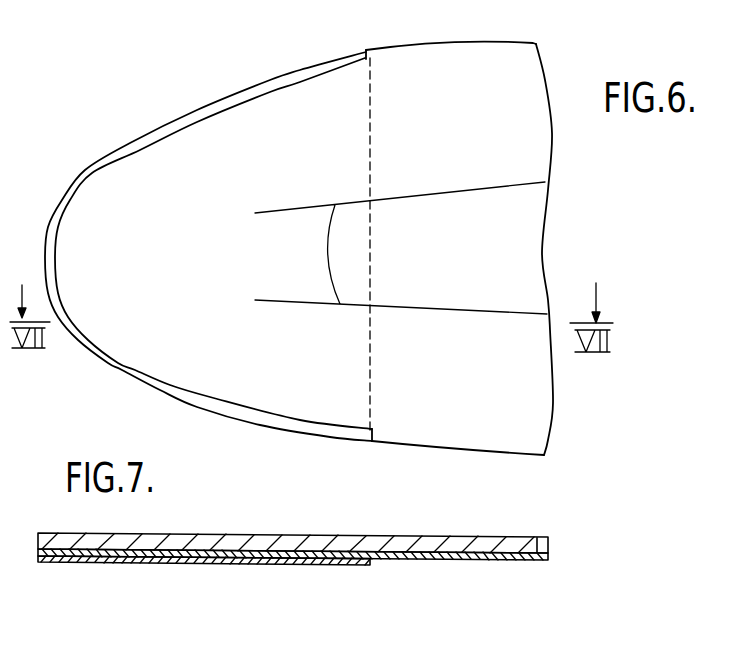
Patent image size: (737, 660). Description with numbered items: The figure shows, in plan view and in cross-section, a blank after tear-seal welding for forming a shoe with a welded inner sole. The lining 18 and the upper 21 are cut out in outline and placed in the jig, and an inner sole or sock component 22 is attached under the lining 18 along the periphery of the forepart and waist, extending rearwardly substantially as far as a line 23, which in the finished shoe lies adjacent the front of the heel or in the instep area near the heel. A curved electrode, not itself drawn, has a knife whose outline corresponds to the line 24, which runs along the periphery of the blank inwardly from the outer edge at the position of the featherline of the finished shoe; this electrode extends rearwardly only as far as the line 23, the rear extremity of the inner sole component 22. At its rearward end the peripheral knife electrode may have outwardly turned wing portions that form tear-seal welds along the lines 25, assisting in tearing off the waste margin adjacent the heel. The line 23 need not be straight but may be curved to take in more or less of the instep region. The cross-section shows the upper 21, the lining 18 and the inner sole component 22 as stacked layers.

In FIG. 7, the lining 18 is at (437, 558).
In FIG. 7, the upper 21 is at (487, 541).
In FIG. 7, the inner sole component 22 is at (302, 566).
In FIG. 6, the line 23 is at (373, 370).
In FIG. 6, the line 24 is at (307, 420).
In FIG. 6, the lines 25 is at (367, 51).